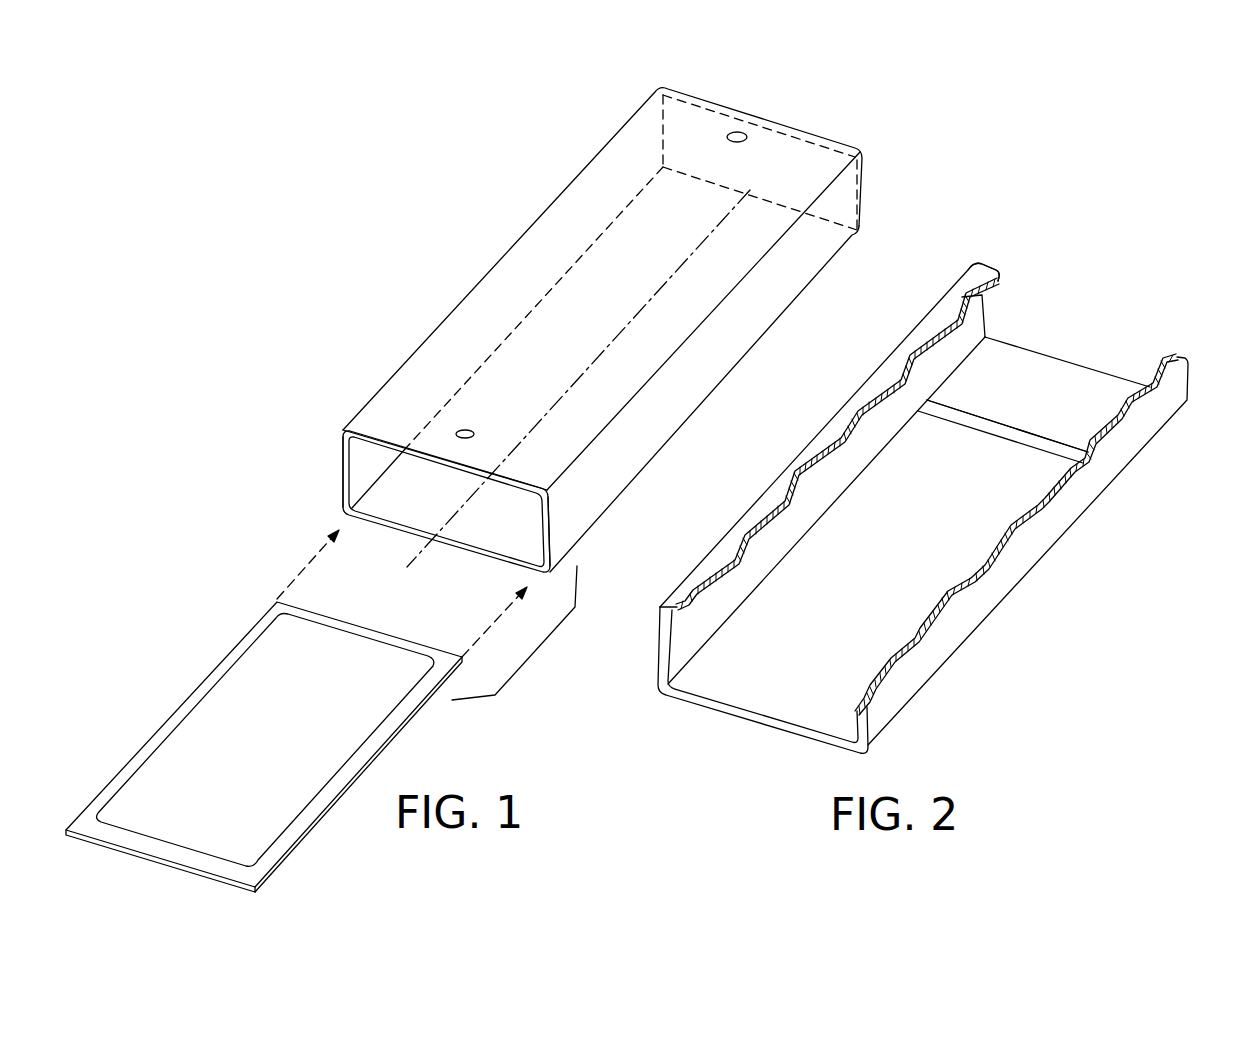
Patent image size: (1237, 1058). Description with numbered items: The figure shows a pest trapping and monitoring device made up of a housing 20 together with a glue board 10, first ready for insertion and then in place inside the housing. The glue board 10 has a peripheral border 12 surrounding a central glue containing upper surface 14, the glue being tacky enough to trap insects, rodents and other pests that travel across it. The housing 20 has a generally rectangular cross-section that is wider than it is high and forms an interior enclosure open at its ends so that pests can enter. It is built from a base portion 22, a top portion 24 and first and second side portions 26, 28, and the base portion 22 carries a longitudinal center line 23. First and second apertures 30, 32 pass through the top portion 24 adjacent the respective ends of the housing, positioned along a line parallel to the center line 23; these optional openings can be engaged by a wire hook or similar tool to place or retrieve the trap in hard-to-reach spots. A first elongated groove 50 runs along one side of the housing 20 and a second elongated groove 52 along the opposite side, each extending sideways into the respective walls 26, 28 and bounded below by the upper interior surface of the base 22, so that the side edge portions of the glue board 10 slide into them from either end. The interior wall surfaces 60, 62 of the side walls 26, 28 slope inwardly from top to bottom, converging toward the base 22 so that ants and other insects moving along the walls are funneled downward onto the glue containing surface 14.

In FIG. 1, the glue board 10 is at (264, 747).
In FIG. 2, the glue board 10 is at (963, 411).
In FIG. 1, the peripheral border 12 is at (357, 764).
In FIG. 2, the peripheral border 12 is at (1025, 433).
In FIG. 1, the central glue containing upper surface 14 is at (252, 677).
In FIG. 2, the central glue containing upper surface 14 is at (988, 489).
In FIG. 1, the housing 20 is at (567, 329).
In FIG. 2, the housing 20 is at (900, 516).
In FIG. 1, the base portion 22 is at (475, 527).
In FIG. 2, the base portion 22 is at (808, 717).
In FIG. 1, the longitudinal center line 23 is at (476, 489).
In FIG. 1, the top portion 24 is at (482, 317).
In FIG. 2, the top portion 24 is at (988, 268).
In FIG. 1, the first side portion 26 is at (650, 440).
In FIG. 2, the first side portion 26 is at (983, 597).
In FIG. 1, the second side portion 28 is at (352, 396).
In FIG. 2, the second side portion 28 is at (653, 638).
In FIG. 1, the first aperture 30 is at (467, 432).
In FIG. 1, the second aperture 32 is at (738, 132).
In FIG. 1, the first elongated groove 50 is at (543, 568).
In FIG. 1, the second elongated groove 52 is at (346, 516).
In FIG. 1, the interior wall surface 60 is at (540, 535).
In FIG. 1, the interior wall surface 62 is at (368, 452).